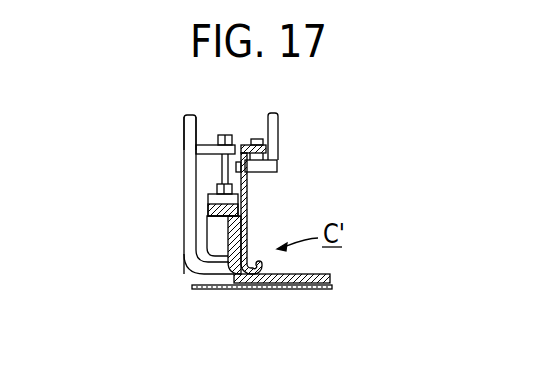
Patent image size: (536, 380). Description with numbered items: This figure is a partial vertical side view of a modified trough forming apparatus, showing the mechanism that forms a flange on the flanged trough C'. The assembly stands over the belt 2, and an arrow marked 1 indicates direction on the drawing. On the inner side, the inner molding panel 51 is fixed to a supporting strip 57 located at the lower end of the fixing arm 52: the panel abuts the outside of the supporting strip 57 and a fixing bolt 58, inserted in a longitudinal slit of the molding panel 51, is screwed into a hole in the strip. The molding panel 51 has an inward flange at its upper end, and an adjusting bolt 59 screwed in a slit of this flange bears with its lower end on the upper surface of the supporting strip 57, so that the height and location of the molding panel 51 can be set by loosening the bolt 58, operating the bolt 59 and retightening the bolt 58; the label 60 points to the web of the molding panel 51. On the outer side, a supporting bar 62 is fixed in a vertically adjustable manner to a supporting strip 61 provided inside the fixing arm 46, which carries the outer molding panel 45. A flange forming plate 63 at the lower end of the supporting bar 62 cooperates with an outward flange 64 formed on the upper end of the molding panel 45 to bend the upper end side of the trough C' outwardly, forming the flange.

The direction of insertion 1 is at (313, 296).
The belt 2 is at (265, 290).
The outer molding panel 45 is at (228, 247).
The fixing arm 46 is at (186, 265).
The inner molding panel 51 is at (248, 232).
The fixing arm 52 is at (277, 129).
The supporting strip 57 is at (277, 167).
The fixing bolt 58 is at (236, 145).
The adjusting bolt 59 is at (256, 139).
The web 60 is at (248, 183).
The supporting strip 61 is at (205, 138).
The supporting bar 62 is at (222, 172).
The flange forming plate 63 is at (208, 195).
The outward flange 64 is at (228, 220).